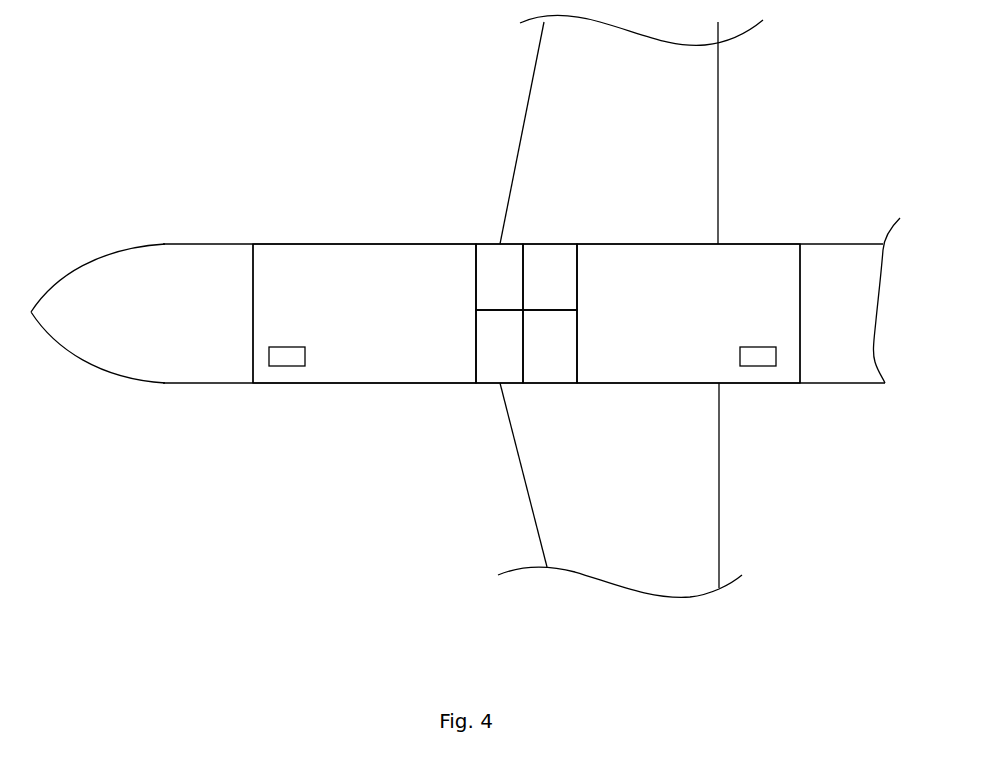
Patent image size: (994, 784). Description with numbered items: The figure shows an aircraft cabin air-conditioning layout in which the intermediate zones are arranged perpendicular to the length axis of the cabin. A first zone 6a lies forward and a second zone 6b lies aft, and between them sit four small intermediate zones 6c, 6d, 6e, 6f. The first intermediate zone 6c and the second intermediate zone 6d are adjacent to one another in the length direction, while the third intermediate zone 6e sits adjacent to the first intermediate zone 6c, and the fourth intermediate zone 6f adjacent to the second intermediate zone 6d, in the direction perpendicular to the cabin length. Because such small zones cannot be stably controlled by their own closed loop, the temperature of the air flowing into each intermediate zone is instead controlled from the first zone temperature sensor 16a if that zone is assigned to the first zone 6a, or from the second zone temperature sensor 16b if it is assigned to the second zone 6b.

The first zone 6a is at (303, 283).
The second zone 6b is at (715, 284).
The first intermediate zone 6c is at (489, 267).
The second intermediate zone 6d is at (545, 266).
The third intermediate zone 6e is at (488, 357).
The fourth intermediate zone 6f is at (541, 358).
The first zone temperature sensor 16a is at (278, 377).
The second zone temperature sensor 16b is at (766, 382).